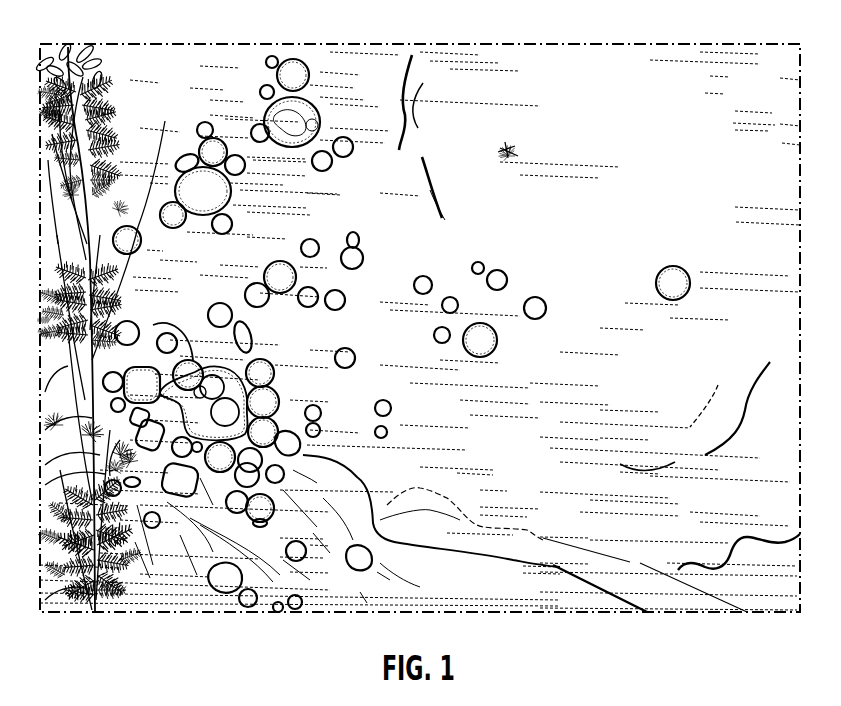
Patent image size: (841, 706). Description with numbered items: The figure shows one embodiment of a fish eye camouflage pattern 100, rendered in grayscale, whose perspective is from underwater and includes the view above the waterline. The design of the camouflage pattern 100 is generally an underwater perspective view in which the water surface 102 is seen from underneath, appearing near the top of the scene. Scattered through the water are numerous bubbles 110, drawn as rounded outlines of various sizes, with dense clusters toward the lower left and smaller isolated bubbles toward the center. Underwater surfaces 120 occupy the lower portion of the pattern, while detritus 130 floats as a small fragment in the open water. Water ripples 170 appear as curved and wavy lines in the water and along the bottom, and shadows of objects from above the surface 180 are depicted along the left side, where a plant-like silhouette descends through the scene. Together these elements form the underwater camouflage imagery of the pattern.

The camouflage pattern 100 is at (634, 175).
The water surface 102 is at (401, 84).
The bubbles 110 is at (542, 305).
The underwater surfaces 120 is at (556, 564).
The detritus 130 is at (508, 148).
The water ripples 170 is at (418, 197).
The shadows of objects from above the surface 180 is at (122, 106).